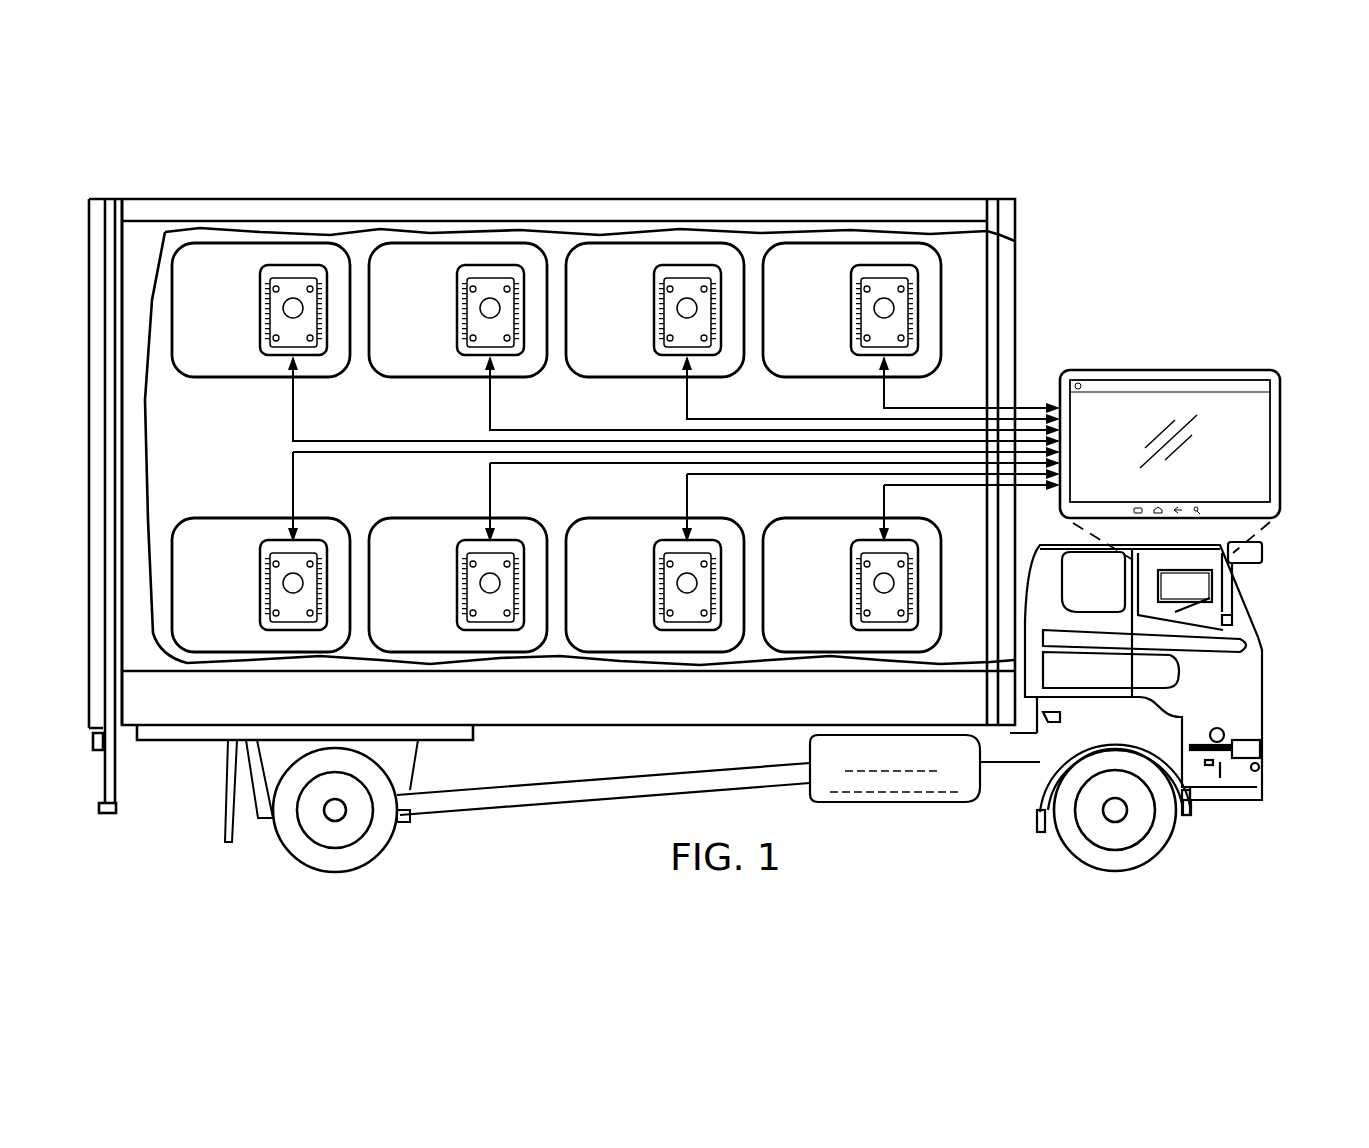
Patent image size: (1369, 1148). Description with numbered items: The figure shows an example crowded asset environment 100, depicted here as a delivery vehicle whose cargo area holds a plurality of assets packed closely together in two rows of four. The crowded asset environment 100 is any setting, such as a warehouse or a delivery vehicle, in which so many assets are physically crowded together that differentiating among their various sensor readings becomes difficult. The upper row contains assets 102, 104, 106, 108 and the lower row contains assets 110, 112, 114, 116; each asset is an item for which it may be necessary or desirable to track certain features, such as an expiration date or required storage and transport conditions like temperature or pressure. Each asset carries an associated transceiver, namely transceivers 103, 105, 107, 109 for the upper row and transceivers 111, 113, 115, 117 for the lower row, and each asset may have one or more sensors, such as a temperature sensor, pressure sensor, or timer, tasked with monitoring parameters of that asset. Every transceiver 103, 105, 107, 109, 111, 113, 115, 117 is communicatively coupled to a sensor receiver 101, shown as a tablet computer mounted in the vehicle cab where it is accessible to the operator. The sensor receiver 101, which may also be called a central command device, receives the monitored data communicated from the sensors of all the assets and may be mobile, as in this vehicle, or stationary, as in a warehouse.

The crowded asset environment 100 is at (168, 153).
The sensor receiver 101 is at (1282, 446).
The asset 102 is at (237, 358).
The transceiver 103 is at (260, 300).
The asset 104 is at (434, 358).
The transceiver 105 is at (457, 300).
The asset 106 is at (631, 358).
The transceiver 107 is at (654, 300).
The asset 108 is at (828, 358).
The transceiver 109 is at (851, 300).
The asset 110 is at (240, 567).
The transceiver 111 is at (260, 595).
The asset 112 is at (437, 567).
The transceiver 113 is at (457, 595).
The asset 114 is at (634, 567).
The transceiver 115 is at (654, 595).
The asset 116 is at (831, 567).
The transceiver 117 is at (851, 595).